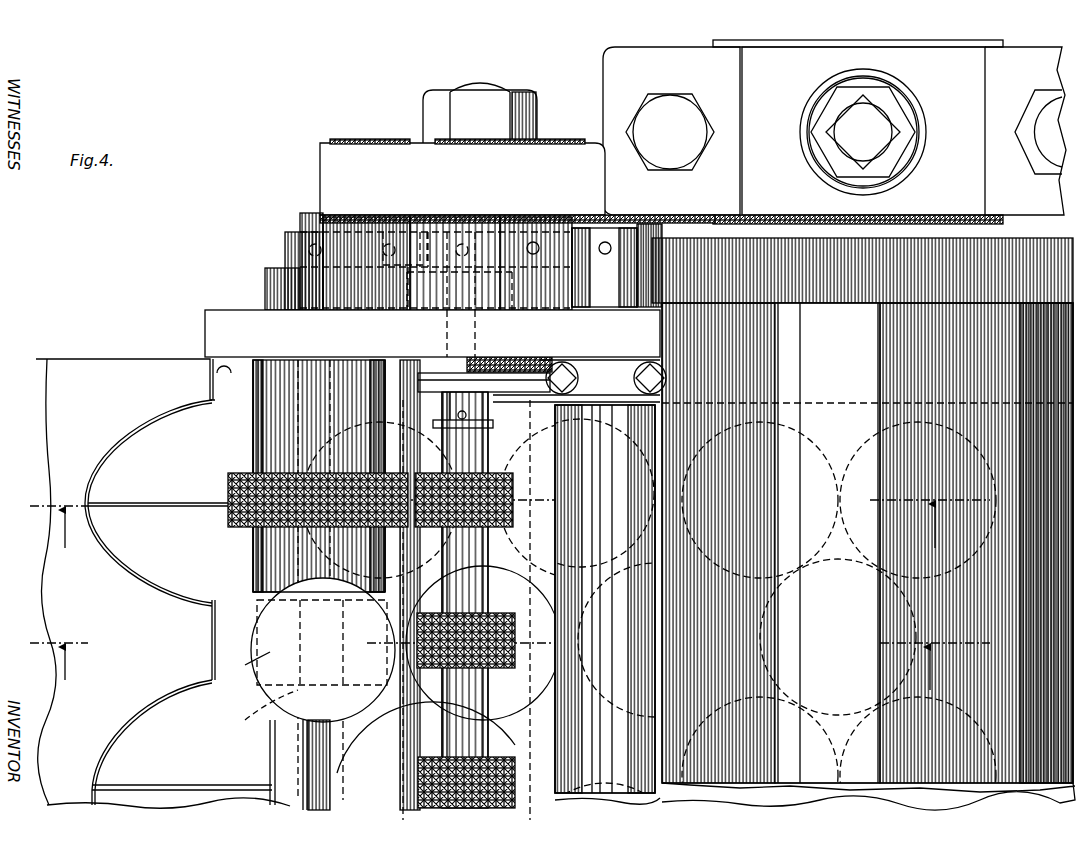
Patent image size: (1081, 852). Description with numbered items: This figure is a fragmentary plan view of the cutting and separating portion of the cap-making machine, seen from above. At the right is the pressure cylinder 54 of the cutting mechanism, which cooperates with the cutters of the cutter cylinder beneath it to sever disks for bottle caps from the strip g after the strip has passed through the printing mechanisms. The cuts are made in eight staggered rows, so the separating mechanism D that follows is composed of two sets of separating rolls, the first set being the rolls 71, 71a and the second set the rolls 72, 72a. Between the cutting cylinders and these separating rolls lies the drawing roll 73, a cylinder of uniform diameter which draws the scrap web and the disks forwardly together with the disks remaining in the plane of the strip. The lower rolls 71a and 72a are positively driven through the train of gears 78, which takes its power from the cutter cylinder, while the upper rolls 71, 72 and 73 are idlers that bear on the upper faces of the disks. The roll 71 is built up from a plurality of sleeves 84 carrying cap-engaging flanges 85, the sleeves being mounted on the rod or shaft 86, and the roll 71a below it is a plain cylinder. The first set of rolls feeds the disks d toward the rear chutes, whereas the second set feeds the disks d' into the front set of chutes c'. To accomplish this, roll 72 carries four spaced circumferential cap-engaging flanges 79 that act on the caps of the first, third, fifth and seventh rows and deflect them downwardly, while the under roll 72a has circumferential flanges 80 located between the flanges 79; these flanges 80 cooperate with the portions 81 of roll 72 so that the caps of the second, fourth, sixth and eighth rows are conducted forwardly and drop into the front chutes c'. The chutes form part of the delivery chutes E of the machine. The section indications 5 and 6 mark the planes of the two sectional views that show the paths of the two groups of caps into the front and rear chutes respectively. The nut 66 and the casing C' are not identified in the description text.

The pressure cylinder 54 is at (865, 323).
The clamping nut 66 is at (806, 242).
The train of gears 78 is at (640, 262).
The separating mechanism D is at (250, 335).
The delivery chutes E is at (88, 357).
The casing C' is at (868, 577).
The front set of chutes c' is at (178, 602).
The separating roll 72 is at (256, 445).
The separating roll 72a is at (255, 717).
The portions of the roll 81 is at (268, 413).
The rod or shaft 86 is at (450, 400).
The strip g is at (556, 582).
The disks d is at (467, 601).
The disks d' is at (405, 688).
The drawing roll 73 is at (619, 628).
The cap-engaging flanges 79 is at (228, 520).
The separating roll 71 is at (445, 528).
The separating roll 71a is at (413, 592).
The sleeves 84 is at (483, 567).
The cap-engaging flanges 85 is at (418, 765).
The circumferential flanges 80 is at (255, 668).
The section line 6 is at (510, 526).
The section line 5 is at (510, 668).